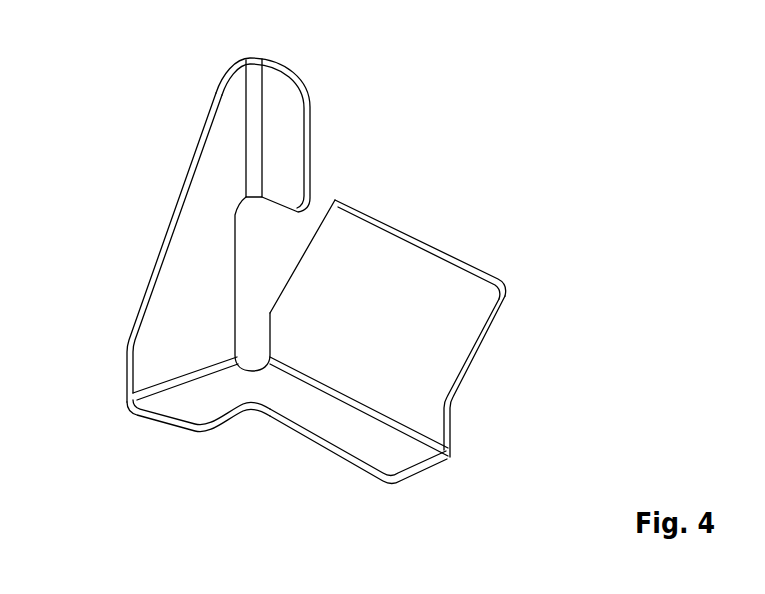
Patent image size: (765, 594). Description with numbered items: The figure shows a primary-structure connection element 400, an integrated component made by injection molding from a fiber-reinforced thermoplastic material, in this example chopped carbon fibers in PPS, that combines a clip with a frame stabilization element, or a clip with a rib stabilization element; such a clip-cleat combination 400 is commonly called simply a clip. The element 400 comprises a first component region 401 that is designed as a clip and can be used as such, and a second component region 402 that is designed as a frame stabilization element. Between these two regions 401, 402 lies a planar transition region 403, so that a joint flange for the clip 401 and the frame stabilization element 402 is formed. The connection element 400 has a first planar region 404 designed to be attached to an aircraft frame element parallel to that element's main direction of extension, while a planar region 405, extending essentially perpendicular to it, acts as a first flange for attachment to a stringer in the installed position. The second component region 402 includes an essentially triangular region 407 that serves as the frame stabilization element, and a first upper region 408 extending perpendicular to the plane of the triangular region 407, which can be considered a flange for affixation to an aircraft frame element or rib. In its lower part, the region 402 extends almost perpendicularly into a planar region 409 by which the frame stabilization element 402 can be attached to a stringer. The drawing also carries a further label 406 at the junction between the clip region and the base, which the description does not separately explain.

The primary-structure connection element 400 is at (552, 130).
The first component region 401 is at (513, 267).
The second component region 402 is at (157, 187).
The planar transition region 403 is at (252, 448).
The first planar region 404 is at (397, 226).
The planar region 405 is at (410, 479).
The bend between base and second leg 406 is at (447, 456).
The triangular region 407 is at (154, 270).
The first upper region 408 is at (287, 68).
The planar region 409 is at (185, 408).